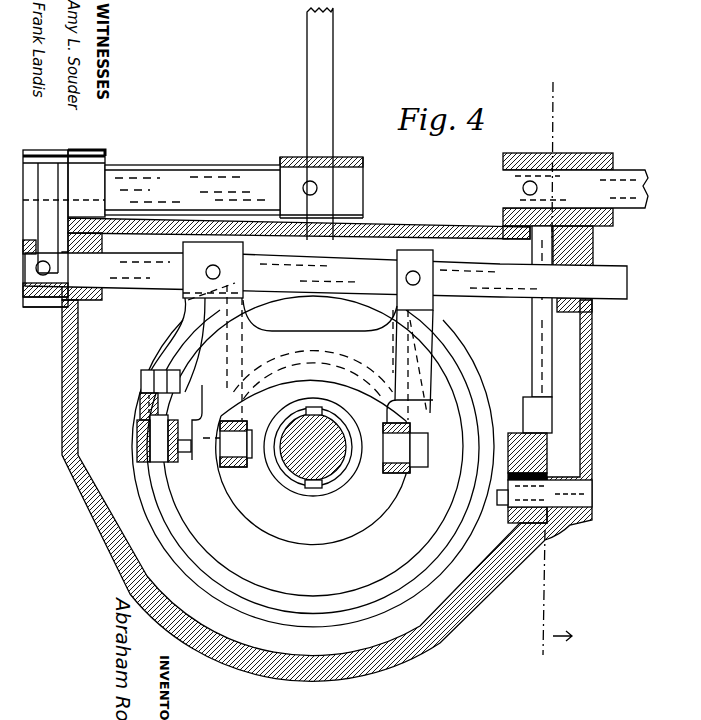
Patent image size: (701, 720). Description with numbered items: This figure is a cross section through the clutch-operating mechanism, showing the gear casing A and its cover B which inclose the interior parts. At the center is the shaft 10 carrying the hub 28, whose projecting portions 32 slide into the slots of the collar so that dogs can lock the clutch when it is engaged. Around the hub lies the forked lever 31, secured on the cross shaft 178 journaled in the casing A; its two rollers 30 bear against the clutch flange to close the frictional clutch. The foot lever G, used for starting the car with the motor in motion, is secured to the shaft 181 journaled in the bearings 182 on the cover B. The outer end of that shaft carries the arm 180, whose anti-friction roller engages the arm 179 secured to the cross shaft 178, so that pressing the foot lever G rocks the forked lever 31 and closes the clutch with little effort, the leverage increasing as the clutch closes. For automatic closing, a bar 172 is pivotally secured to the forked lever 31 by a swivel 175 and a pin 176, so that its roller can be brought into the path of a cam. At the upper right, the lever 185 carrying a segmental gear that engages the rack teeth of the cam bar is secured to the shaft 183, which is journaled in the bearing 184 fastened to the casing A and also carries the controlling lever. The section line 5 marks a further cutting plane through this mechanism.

The gear casing A is at (80, 497).
The cover B is at (412, 230).
The foot lever G is at (320, 55).
The section line 5- 5 is at (552, 372).
The shaft 10 is at (303, 460).
The hub 28 is at (347, 418).
The rollers 30 is at (233, 467).
The forked lever 31 is at (316, 349).
The projecting portions 32 is at (315, 407).
The bar 172 is at (137, 458).
The swivel 175 is at (160, 453).
The pin 176 is at (185, 453).
The cross shaft 178 is at (503, 292).
The arm 179 is at (45, 307).
The arm 180 is at (40, 150).
The shaft 181 is at (170, 158).
The bearings 182 is at (102, 138).
The shaft 183 is at (640, 188).
The bearing 184 is at (603, 147).
The lever 185 is at (536, 348).